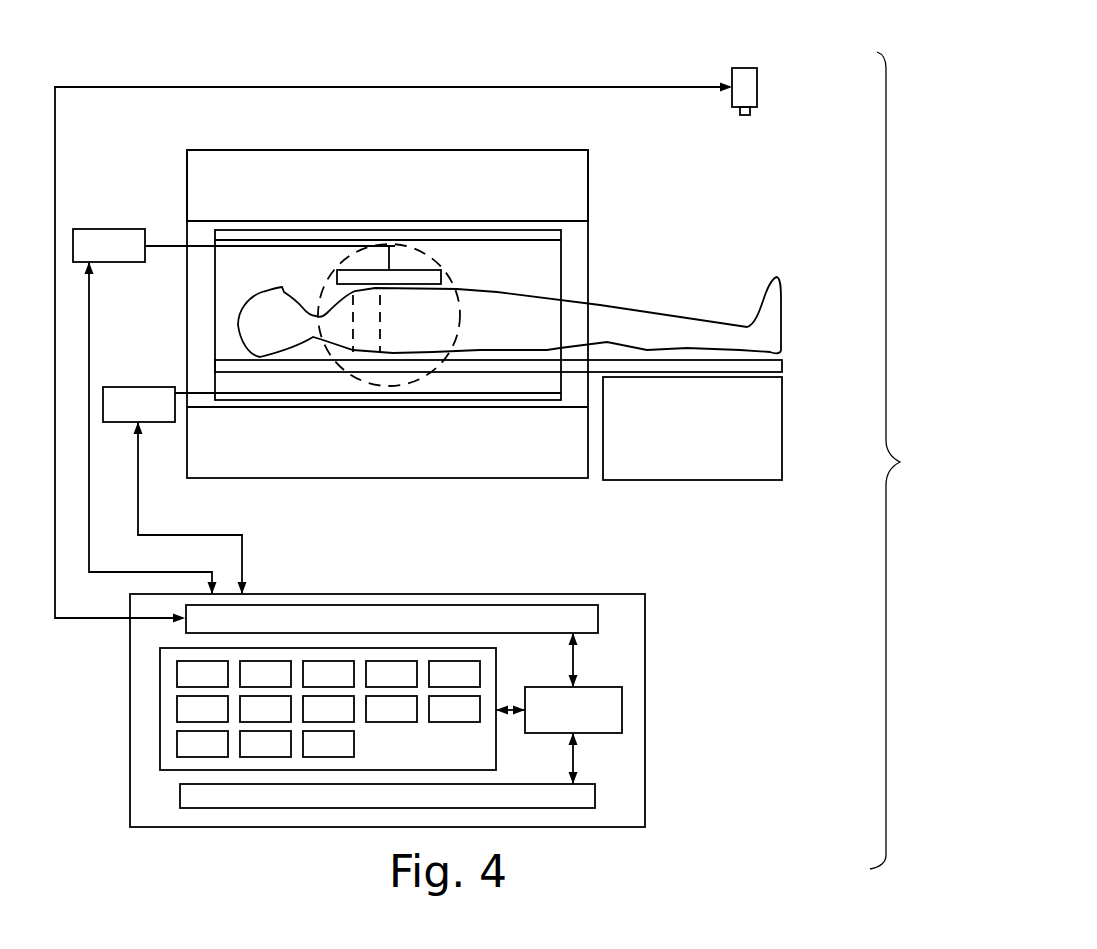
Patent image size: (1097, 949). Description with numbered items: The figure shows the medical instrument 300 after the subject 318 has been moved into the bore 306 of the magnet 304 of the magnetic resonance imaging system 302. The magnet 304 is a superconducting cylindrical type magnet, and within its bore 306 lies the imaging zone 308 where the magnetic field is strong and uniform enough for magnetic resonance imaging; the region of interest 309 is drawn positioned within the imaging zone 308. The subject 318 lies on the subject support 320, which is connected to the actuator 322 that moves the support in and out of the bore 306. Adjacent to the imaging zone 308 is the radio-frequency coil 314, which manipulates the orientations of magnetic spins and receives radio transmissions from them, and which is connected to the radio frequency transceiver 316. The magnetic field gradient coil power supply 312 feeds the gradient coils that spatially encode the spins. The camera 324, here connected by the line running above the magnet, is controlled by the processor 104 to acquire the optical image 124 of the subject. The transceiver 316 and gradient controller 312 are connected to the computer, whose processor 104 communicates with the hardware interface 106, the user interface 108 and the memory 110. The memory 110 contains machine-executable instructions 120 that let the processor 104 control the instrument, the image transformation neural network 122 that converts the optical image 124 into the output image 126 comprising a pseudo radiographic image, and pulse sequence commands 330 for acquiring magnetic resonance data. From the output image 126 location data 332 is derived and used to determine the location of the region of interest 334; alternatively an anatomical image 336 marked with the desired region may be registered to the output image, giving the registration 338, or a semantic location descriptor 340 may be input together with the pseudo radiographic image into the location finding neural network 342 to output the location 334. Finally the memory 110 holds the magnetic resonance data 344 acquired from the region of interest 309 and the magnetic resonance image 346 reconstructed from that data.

The medical instrument 300 is at (916, 460).
The magnetic resonance imaging system 302 is at (605, 138).
The magnet 304 is at (588, 152).
The bore 306 is at (540, 258).
The imaging zone 308 is at (327, 350).
The region of interest 309 is at (350, 338).
The radio-frequency coil 314 is at (410, 268).
The radio frequency transceiver 316 is at (234, 411).
The magnetic field gradient coil power supply 312 is at (175, 490).
The subject 318 is at (780, 318).
The subject support 320 is at (782, 366).
The actuator 322 is at (746, 480).
The camera 324 is at (757, 88).
The memory 110 is at (158, 683).
The hardware interface 106 is at (392, 620).
The user interface 108 is at (387, 796).
The processor 104 is at (559, 708).
The machine-executable instructions 120 is at (202, 675).
The image transformation neural network 122 is at (265, 675).
The optical image 124 is at (328, 675).
The output image 126 is at (391, 675).
The pulse sequence commands 330 is at (454, 675).
The location data 332 is at (202, 710).
The location of region of interest 334 is at (265, 710).
The anatomical image 336 is at (328, 710).
The registration 338 is at (391, 710).
The semantic location descriptor 340 is at (454, 710).
The location finding neural network 342 is at (202, 745).
The magnetic resonance data 344 is at (265, 745).
The magnetic resonance image 346 is at (328, 745).